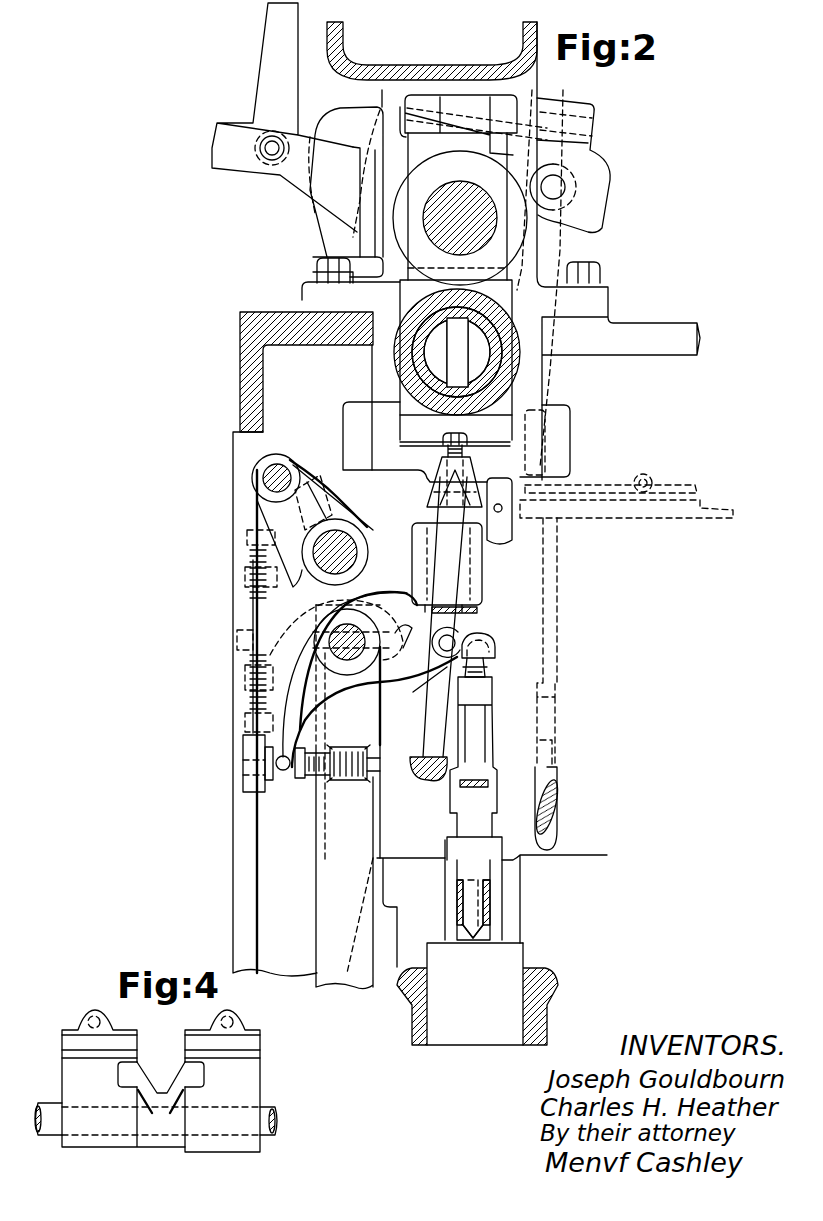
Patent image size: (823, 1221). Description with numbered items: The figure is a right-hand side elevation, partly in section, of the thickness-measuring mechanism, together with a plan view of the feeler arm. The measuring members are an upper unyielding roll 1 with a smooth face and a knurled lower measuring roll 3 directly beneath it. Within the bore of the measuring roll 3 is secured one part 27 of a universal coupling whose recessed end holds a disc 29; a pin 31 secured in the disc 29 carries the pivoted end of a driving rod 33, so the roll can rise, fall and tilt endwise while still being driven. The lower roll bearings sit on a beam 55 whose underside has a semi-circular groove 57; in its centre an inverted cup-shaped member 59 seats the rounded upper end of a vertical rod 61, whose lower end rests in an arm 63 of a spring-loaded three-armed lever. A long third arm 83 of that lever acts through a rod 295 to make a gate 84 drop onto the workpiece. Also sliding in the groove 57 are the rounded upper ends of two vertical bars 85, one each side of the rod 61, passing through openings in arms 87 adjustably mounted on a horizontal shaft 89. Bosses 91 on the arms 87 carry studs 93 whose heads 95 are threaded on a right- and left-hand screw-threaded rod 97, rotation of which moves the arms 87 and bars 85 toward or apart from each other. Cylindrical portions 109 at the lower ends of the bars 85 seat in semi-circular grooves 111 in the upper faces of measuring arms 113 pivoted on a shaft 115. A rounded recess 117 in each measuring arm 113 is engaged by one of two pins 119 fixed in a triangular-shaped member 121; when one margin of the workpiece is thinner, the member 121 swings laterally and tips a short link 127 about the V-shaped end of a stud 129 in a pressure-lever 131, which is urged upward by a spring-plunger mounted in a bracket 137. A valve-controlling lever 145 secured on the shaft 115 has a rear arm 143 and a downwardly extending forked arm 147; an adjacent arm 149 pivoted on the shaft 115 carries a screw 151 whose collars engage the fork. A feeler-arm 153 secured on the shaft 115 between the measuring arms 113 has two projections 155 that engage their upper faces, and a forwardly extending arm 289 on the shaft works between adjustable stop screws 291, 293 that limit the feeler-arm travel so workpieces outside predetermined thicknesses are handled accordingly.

In FIG. 2, the upper unyielding roll 1 is at (500, 245).
In FIG. 2, the lower measuring roll 3 is at (477, 400).
In FIG. 2, the part of universal coupling 27 is at (473, 330).
In FIG. 2, the disc 29 is at (447, 377).
In FIG. 2, the pin 31 is at (455, 385).
In FIG. 2, the driving rod 33 is at (473, 352).
In FIG. 2, the beam 55 is at (405, 457).
In FIG. 2, the groove 57 is at (470, 490).
In FIG. 2, the inverted cup-shaped member 59 is at (428, 498).
In FIG. 2, the rod 61 is at (430, 725).
In FIG. 2, the arm 63 is at (437, 777).
In FIG. 2, the third arm 83 is at (555, 808).
In FIG. 2, the gate 84 is at (326, 228).
In FIG. 2, the vertical bars 85 is at (477, 608).
In FIG. 2, the arms 87 is at (478, 563).
In FIG. 2, the horizontal shaft 89 is at (343, 540).
In FIG. 2, the bosses 91 is at (307, 484).
In FIG. 2, the studs 93 is at (328, 492).
In FIG. 2, the heads 95 is at (257, 472).
In FIG. 2, the right- and left-hand screw-threaded rod 97 is at (280, 470).
In FIG. 2, the cylindrical portions 109 is at (470, 593).
In FIG. 2, the semi-circular grooves 111 is at (478, 665).
In FIG. 4, the semi-circular grooves 111 is at (68, 1043).
In FIG. 2, the measuring arms 113 is at (417, 690).
In FIG. 4, the measuring arms 113 is at (68, 1075).
In FIG. 2, the shaft 115 is at (330, 632).
In FIG. 4, the shaft 115 is at (267, 1118).
In FIG. 2, the rounded recess 117 is at (479, 636).
In FIG. 2, the pins 119 is at (483, 675).
In FIG. 2, the triangular-shaped member 121 is at (487, 742).
In FIG. 2, the short link 127 is at (463, 828).
In FIG. 2, the stud 129 is at (467, 892).
In FIG. 2, the pressure-lever 131 is at (477, 940).
In FIG. 2, the bracket 137 is at (560, 983).
In FIG. 2, the arm 143 is at (374, 712).
In FIG. 2, the valve-controlling lever 145 is at (335, 620).
In FIG. 2, the downwardly extending arm 147 is at (308, 702).
In FIG. 2, the downwardly extending arm 149 is at (327, 840).
In FIG. 2, the screw 151 is at (313, 778).
In FIG. 2, the feeler-arm 153 is at (380, 602).
In FIG. 4, the feeler-arm 153 is at (163, 1140).
In FIG. 2, the projections 155 is at (403, 630).
In FIG. 4, the projections 155 is at (127, 1078).
In FIG. 2, the forwardly extending arm 289 is at (243, 638).
In FIG. 2, the adjustable stop screw 291 is at (252, 593).
In FIG. 2, the adjustable stop screw 293 is at (258, 662).
In FIG. 2, the rod 295 is at (557, 553).